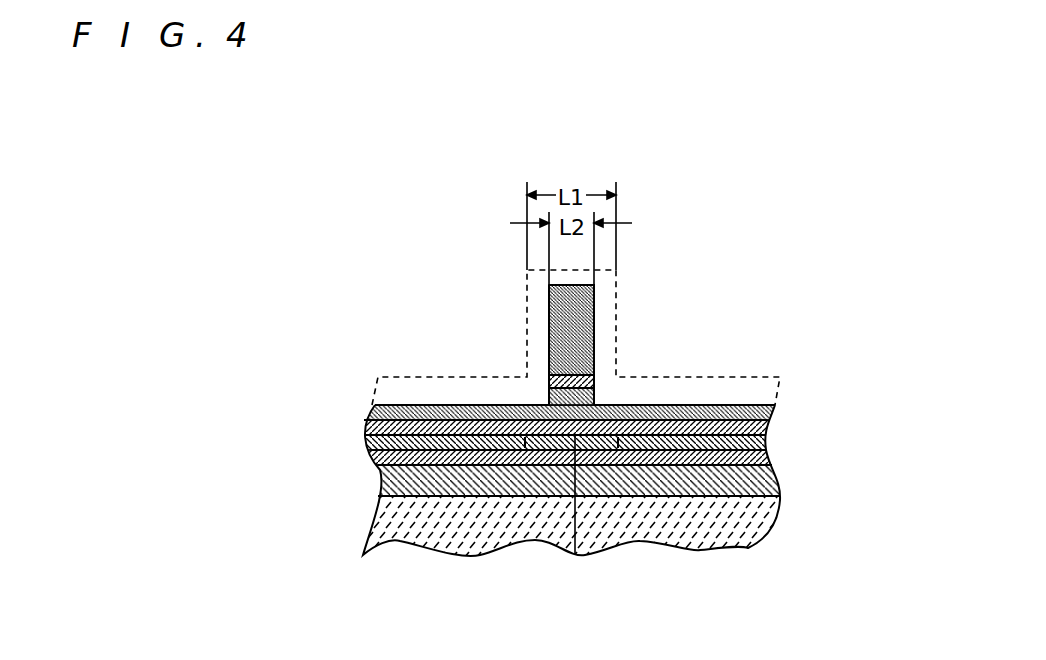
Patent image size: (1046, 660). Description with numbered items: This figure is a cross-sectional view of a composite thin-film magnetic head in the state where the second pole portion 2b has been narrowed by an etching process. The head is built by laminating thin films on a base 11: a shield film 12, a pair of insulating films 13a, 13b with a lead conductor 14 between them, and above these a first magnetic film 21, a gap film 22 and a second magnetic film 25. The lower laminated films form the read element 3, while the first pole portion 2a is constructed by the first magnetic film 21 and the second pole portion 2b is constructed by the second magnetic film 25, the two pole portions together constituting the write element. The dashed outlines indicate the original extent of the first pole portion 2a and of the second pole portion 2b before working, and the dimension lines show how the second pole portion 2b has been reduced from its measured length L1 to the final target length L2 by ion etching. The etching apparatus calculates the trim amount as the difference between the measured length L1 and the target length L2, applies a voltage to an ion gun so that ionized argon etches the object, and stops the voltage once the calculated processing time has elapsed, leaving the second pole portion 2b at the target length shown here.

The first pole portion 2a is at (495, 405).
The second pole portion 2b is at (560, 310).
The read element 3 is at (575, 555).
The base 11 is at (767, 522).
The shield film 12 is at (780, 488).
The insulating film 13a is at (772, 458).
The insulating film 13b is at (766, 428).
The lead conductor 14 is at (766, 445).
The first magnetic film 21 is at (775, 415).
The gap film 22 is at (594, 385).
The second magnetic film 25 is at (594, 332).